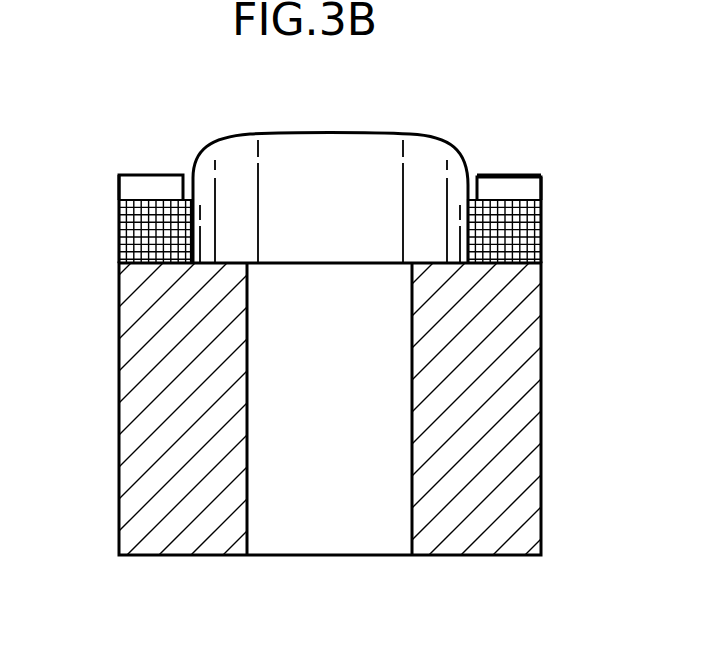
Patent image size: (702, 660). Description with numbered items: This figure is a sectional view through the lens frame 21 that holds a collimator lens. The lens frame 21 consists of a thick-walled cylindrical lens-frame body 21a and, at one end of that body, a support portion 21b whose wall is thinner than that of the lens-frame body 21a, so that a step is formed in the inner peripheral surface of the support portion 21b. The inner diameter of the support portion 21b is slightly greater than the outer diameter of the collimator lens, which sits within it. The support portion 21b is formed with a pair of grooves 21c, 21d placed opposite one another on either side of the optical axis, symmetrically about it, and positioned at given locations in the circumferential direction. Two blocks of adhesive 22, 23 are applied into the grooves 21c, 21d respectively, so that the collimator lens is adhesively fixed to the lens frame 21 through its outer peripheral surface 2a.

The outer peripheral surface 2a is at (469, 198).
The lens frame 21 is at (326, 318).
The lens-frame body 21a is at (508, 425).
The support portion 21b is at (508, 162).
The groove 21c is at (528, 188).
The groove 21d is at (155, 187).
The adhesive 22 is at (530, 243).
The adhesive 23 is at (143, 231).